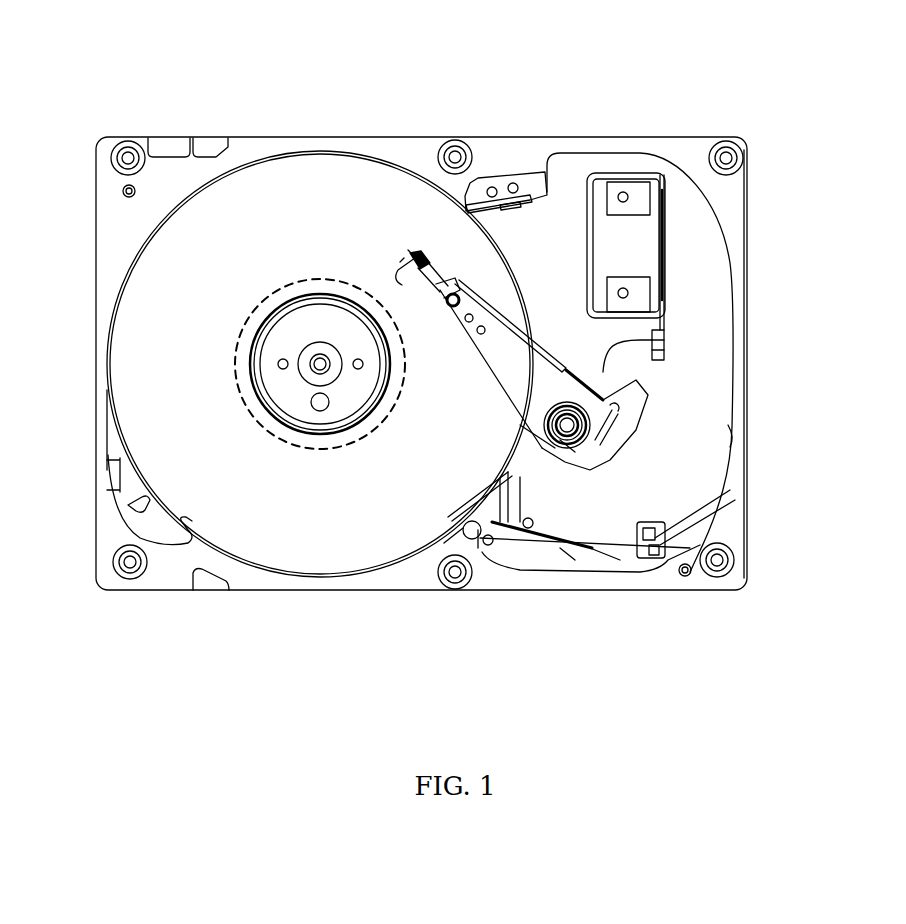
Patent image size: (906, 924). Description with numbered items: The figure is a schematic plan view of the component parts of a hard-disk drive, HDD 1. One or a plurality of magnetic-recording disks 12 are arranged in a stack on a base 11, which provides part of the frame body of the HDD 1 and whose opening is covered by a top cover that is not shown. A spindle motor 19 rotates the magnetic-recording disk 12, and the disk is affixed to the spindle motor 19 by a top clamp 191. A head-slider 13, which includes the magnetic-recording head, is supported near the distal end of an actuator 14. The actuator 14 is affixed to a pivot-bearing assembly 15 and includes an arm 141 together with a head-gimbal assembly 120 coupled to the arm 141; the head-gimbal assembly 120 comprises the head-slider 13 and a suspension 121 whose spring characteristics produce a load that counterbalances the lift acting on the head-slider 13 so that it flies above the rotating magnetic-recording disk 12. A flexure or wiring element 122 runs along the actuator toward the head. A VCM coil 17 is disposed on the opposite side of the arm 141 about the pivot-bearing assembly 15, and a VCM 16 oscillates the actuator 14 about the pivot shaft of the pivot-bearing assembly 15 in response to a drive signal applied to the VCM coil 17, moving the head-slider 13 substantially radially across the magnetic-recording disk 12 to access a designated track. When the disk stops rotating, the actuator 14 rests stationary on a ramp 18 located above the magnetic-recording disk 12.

The hard-disk drive 1 is at (598, 76).
The base 11 is at (96, 230).
The magnetic-recording disk 12 is at (120, 432).
The head-slider 13 is at (408, 264).
The actuator 14 is at (539, 348).
The pivot-bearing assembly 15 is at (528, 441).
The VCM 16 is at (712, 469).
The VCM coil 17 is at (598, 465).
The ramp 18 is at (497, 212).
The spindle motor 19 is at (325, 450).
The head-gimbal assembly 120 is at (440, 258).
The suspension 121 is at (440, 292).
The flexure / wiring 122 is at (489, 311).
The arm 141 is at (472, 354).
The top clamp 191 is at (322, 283).